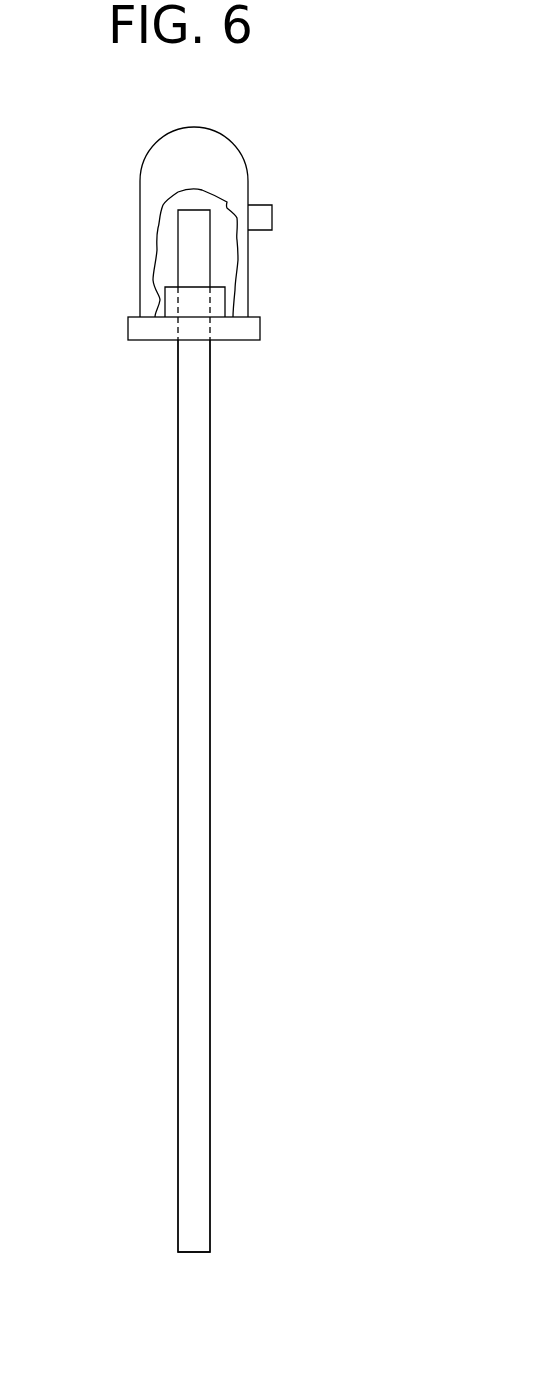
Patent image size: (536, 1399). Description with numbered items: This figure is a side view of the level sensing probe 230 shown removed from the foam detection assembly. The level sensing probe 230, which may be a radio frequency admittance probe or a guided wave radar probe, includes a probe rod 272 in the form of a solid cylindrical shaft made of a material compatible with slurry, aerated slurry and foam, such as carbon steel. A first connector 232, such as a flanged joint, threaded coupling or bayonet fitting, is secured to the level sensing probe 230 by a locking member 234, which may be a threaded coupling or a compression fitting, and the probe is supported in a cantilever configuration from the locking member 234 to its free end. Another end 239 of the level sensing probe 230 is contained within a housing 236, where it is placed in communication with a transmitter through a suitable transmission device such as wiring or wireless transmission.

The level sensing probe 230 is at (195, 540).
The first connector 232 is at (262, 325).
The locking member 234 is at (165, 300).
The housing 236 is at (243, 150).
The end of the level sensing probe 239 is at (198, 224).
The probe rod 272 is at (195, 790).